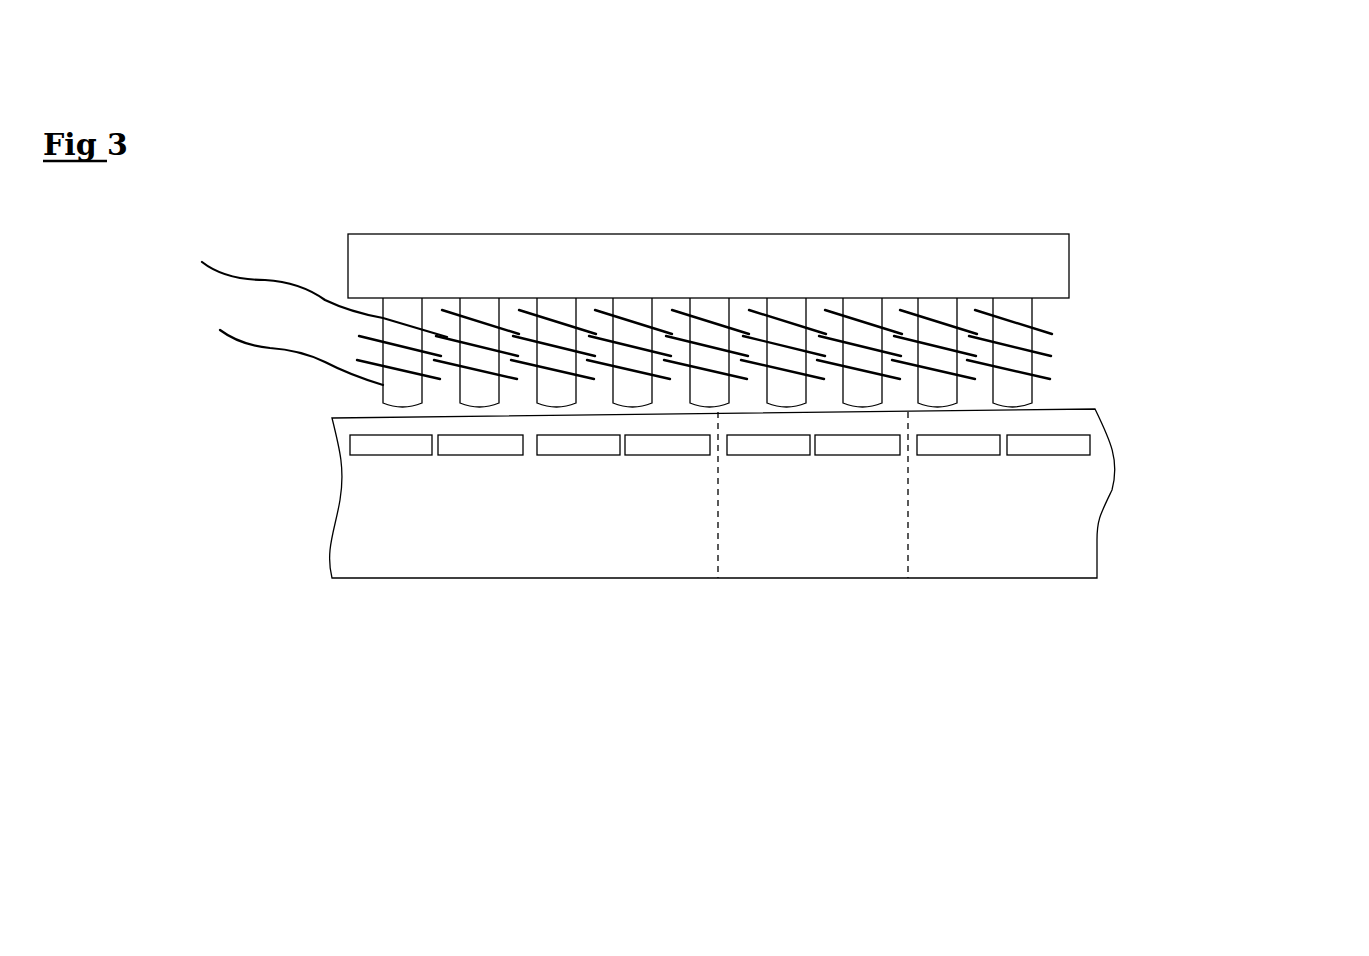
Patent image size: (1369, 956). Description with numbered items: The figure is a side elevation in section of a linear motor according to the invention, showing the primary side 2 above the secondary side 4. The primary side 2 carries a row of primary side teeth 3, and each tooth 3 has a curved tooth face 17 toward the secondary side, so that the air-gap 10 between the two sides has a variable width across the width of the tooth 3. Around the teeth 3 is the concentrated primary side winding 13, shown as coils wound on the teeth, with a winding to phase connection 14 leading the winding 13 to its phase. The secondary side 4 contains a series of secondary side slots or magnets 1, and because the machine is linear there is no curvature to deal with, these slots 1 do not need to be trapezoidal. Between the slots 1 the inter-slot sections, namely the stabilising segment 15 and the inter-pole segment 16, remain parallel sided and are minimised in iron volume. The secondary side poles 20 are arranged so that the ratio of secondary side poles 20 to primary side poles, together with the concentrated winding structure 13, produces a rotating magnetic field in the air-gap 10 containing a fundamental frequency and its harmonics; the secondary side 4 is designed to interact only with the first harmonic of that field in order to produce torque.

The secondary side slot/magnet 1 is at (1062, 442).
The primary side 2 is at (982, 255).
The primary side tooth 3 is at (1017, 312).
The secondary side 4 is at (1017, 503).
The air-gap 10 is at (383, 410).
The primary side winding 13 is at (1053, 378).
The winding to phase connection 14 is at (307, 283).
The stabilising segment 15 is at (437, 457).
The inter-pole segment 16 is at (532, 457).
The curved tooth face 17 is at (709, 412).
The secondary side pole 20 is at (821, 508).